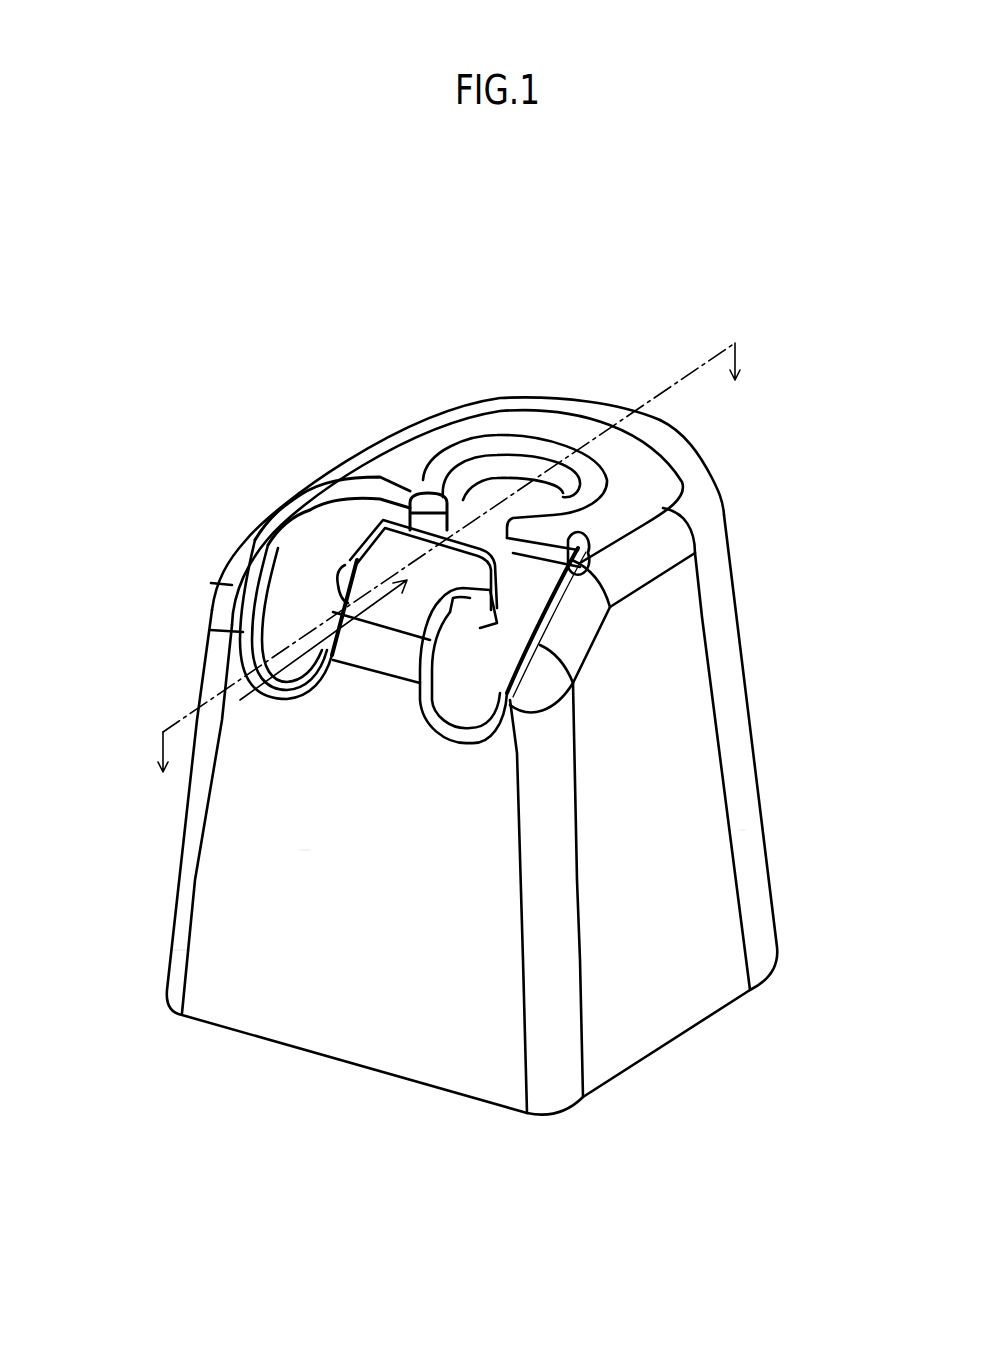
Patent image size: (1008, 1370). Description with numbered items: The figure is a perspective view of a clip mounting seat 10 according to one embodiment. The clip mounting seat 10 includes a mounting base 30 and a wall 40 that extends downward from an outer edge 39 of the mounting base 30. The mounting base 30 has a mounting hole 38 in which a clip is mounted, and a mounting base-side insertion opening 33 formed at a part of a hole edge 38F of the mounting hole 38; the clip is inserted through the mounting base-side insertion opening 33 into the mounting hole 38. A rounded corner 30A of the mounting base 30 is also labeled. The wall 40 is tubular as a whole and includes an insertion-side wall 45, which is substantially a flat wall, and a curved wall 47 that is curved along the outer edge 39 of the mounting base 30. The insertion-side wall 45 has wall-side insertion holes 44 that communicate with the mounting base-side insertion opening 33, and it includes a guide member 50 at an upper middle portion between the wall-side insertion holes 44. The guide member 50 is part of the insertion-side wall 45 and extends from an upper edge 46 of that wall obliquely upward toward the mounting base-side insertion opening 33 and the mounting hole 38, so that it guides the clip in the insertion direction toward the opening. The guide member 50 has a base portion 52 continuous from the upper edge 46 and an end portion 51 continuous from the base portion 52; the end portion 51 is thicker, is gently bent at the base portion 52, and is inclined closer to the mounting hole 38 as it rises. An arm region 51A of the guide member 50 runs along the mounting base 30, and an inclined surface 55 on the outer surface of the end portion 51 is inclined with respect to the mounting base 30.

The clip mounting seat 10 is at (802, 355).
The mounting base 30 is at (377, 430).
The rounded corner of head 30A is at (643, 483).
The mounting base-side insertion opening 33 is at (583, 562).
The mounting hole 38 is at (502, 480).
The hole edge 38F is at (465, 488).
The outer edge 39 is at (388, 420).
The wall 40 is at (688, 733).
The wall-side insertion holes 44 is at (310, 572).
The insertion-side wall 45 is at (243, 907).
The upper edge 46 is at (347, 693).
The curved wall 47 is at (712, 810).
The guide member 50 is at (445, 735).
The end portion 51 is at (573, 683).
The left arm band of clip 51A is at (345, 478).
The base portion 52 is at (370, 668).
The inclined surface 55 is at (430, 583).